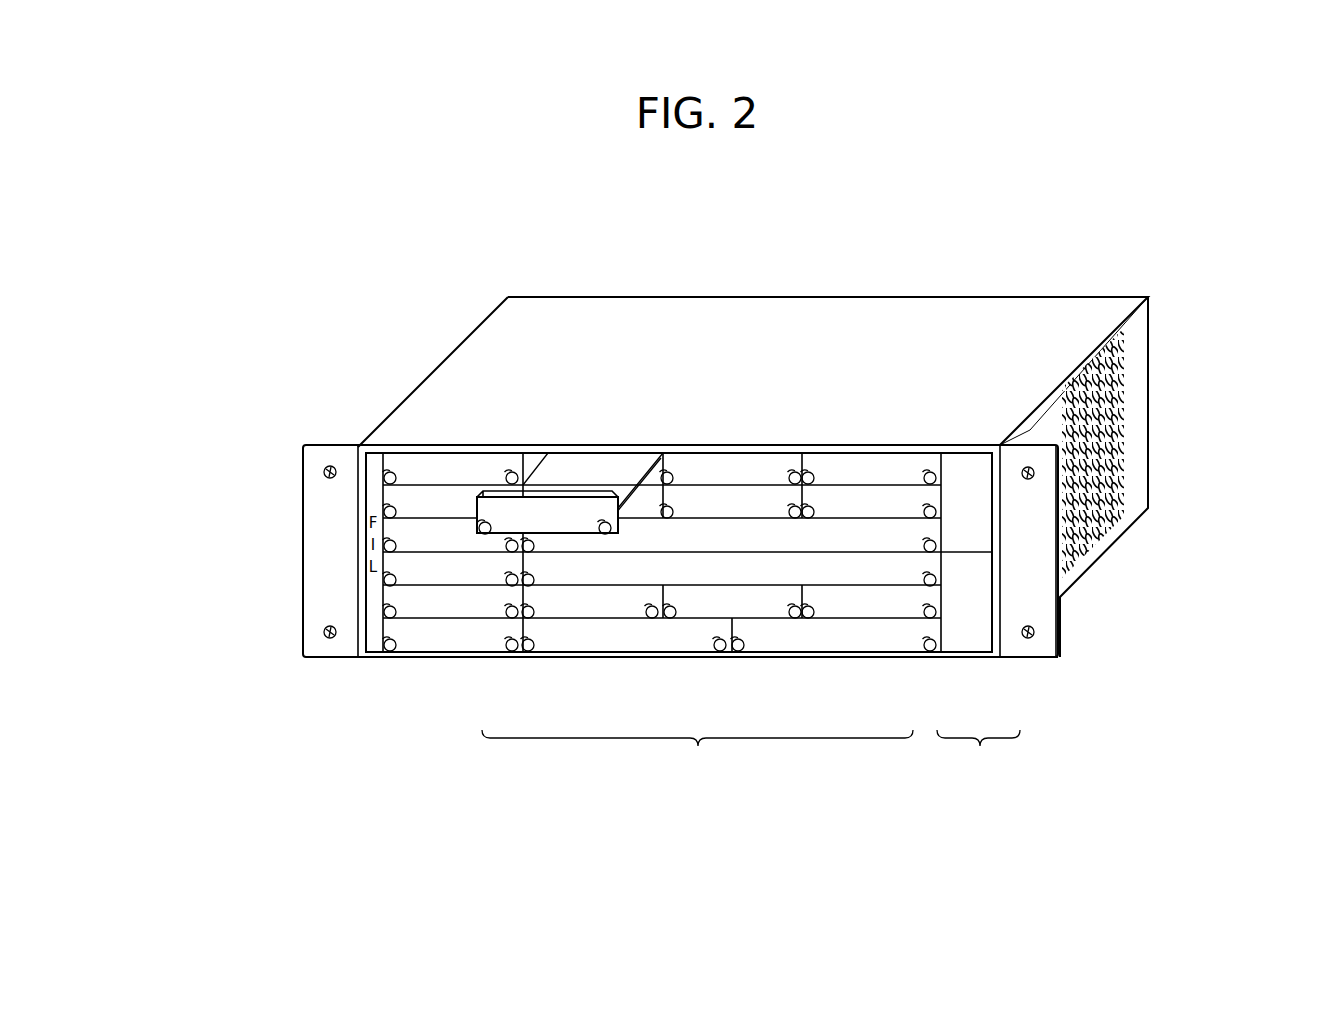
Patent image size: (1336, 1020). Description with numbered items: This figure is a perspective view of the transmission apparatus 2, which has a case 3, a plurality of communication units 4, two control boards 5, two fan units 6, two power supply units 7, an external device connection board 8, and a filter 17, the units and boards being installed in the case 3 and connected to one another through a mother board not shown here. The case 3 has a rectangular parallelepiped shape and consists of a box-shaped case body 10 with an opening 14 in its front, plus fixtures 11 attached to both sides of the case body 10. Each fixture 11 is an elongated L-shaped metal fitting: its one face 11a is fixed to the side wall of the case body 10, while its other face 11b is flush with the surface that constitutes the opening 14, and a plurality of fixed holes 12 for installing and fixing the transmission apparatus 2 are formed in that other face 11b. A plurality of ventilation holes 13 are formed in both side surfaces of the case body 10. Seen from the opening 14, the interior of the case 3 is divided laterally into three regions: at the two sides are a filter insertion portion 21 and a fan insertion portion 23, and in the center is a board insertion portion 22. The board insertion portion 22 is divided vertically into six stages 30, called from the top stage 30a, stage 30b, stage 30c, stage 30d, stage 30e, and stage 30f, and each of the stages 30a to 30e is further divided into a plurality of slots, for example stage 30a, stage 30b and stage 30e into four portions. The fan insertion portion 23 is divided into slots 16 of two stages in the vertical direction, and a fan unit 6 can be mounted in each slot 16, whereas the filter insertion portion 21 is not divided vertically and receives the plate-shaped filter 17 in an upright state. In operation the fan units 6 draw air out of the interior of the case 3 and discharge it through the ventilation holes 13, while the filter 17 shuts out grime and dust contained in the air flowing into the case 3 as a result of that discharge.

The transmission apparatus 2 is at (790, 262).
The case 3 is at (753, 439).
The communication units 4 is at (502, 507).
The control boards 5 is at (847, 567).
The fan units 6 is at (972, 596).
The power supply units 7 is at (687, 637).
The external device connection board 8 is at (492, 637).
The case body 10 is at (1023, 340).
The fixture 11 is at (769, 504).
The one face 11a is at (1030, 432).
The other face 11b is at (1043, 650).
The fixed holes 12 is at (1035, 630).
The ventilation holes 13 is at (1108, 385).
The opening 14 is at (560, 567).
The slots 16 is at (983, 537).
The filter 17 is at (438, 678).
The filter insertion portion 21 is at (373, 637).
The board insertion portion 22 is at (697, 757).
The fan insertion portion 23 is at (978, 757).
The stages 30 is at (277, 559).
The stage 30a is at (386, 472).
The second stage 30b is at (386, 506).
The first stage 30c is at (386, 540).
The fourth stage 30d is at (386, 574).
The third stage 30e is at (386, 606).
The fifth stage 30f is at (386, 639).